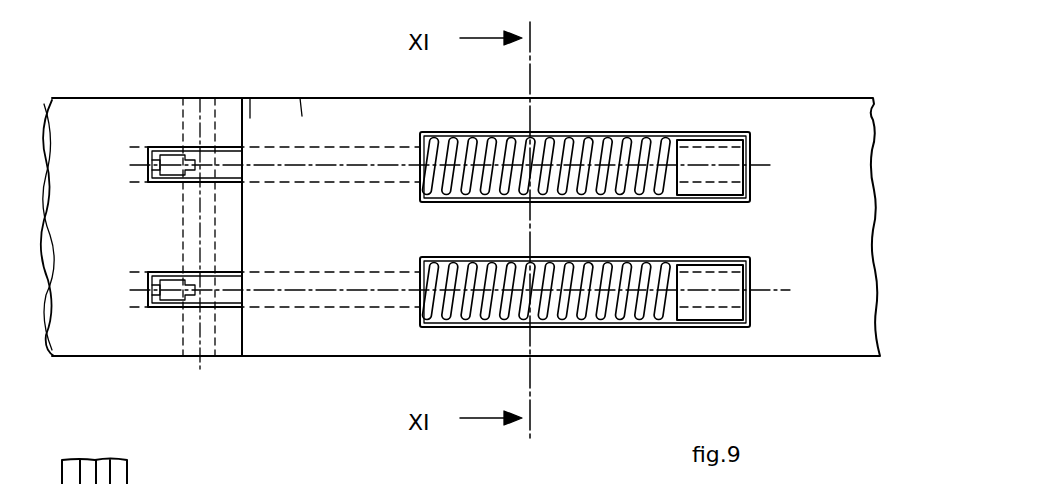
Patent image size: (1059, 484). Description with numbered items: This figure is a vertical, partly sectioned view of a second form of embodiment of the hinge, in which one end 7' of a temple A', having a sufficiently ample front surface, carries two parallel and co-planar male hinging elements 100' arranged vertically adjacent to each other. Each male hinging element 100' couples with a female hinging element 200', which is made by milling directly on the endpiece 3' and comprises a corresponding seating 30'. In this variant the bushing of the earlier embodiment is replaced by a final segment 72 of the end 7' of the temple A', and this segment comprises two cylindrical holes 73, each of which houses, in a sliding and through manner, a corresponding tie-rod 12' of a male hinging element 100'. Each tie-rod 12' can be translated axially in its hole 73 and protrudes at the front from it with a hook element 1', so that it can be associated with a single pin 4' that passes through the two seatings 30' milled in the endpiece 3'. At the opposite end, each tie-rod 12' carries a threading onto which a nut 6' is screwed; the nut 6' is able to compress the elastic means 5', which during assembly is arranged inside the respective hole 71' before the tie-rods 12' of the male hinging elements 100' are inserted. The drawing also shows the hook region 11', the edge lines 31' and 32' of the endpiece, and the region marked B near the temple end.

The female hinging element 200' is at (109, 96).
The hook element 1' is at (195, 182).
The seating 30' is at (111, 227).
The contact key 11' is at (152, 255).
The hidden edge of plate 32' is at (185, 212).
The plate edge 31' is at (259, 204).
The final segment 72 is at (256, 97).
The end of temple 7' is at (290, 79).
The cylindrical hole 73 is at (373, 145).
The pin 4' is at (254, 211).
The endpiece 3' is at (144, 251).
The hole 71' is at (431, 242).
The tie-rod 12' is at (547, 231).
The male hinging element 100' is at (585, 235).
The nut 6' is at (729, 235).
The elastic means 5' is at (615, 309).
The temple A' is at (468, 192).
The connector region B is at (332, 66).